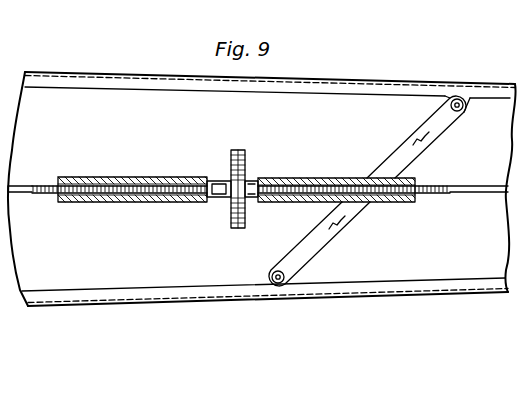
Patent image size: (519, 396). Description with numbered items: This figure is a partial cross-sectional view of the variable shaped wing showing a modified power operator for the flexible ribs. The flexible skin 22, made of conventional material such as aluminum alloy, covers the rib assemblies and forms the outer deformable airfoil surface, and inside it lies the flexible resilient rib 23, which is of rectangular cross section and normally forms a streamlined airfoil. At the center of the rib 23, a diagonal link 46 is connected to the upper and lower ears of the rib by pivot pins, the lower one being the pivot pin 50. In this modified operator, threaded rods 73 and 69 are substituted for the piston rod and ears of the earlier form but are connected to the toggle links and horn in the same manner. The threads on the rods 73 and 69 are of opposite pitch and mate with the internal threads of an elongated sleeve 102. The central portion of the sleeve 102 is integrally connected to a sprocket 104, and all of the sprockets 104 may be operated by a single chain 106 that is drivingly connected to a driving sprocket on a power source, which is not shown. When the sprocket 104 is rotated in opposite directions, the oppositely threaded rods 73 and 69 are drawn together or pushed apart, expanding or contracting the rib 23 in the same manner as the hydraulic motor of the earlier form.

The flexible skin 22 is at (113, 70).
The flexible resilient rib 23 is at (183, 83).
The threaded rod 73 is at (21, 183).
The elongated sleeve 102 is at (128, 178).
The sprocket 104 is at (236, 172).
The chain 106 is at (257, 145).
The diagonal link 46 is at (420, 130).
The pivot pin 50 is at (270, 278).
The threaded rod 69 is at (455, 188).